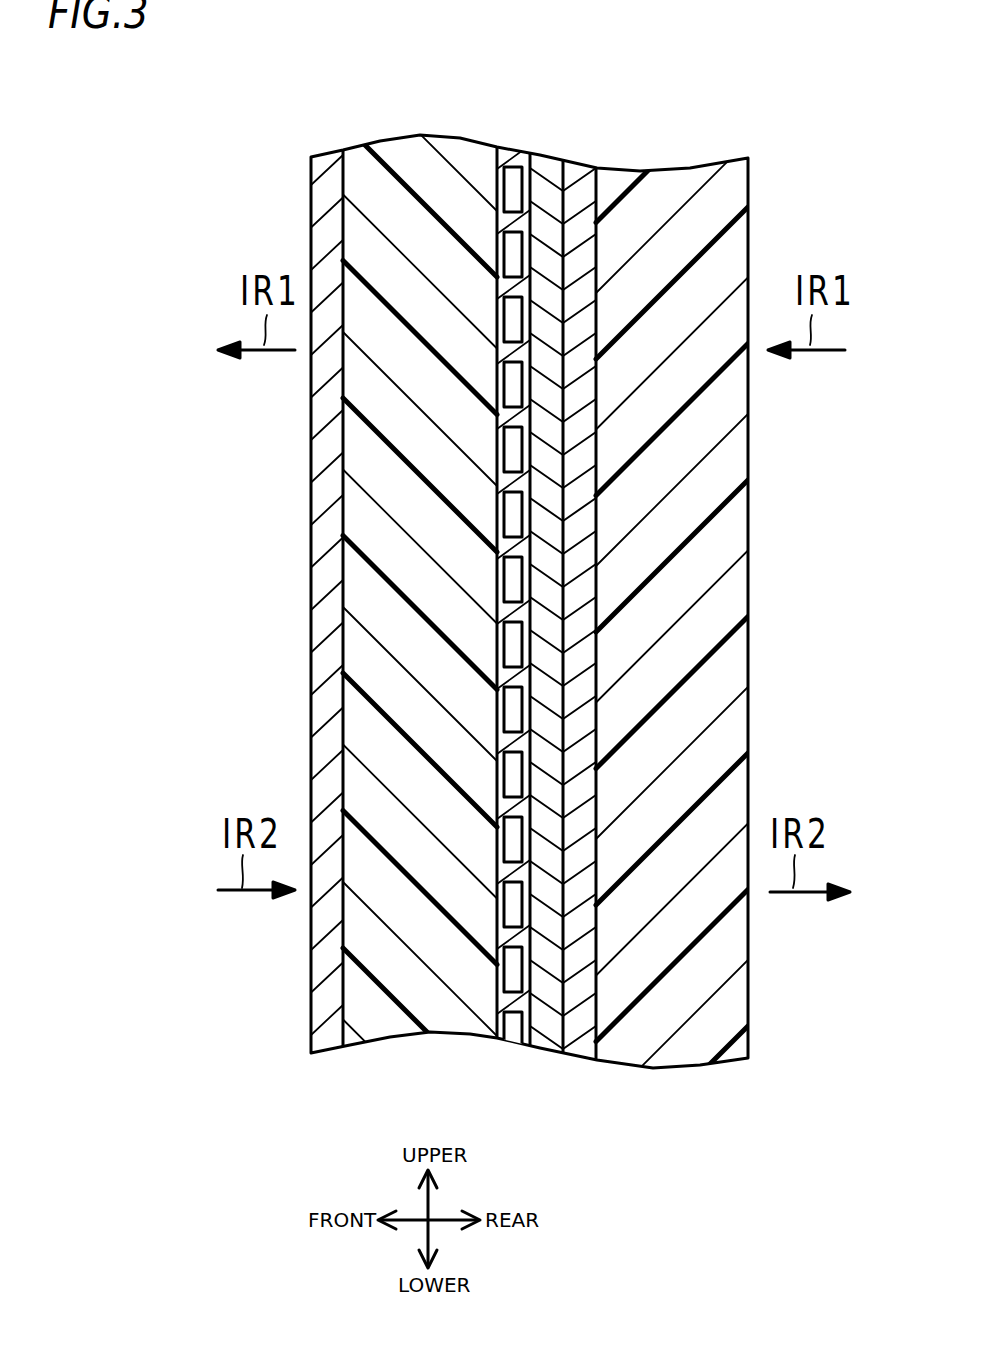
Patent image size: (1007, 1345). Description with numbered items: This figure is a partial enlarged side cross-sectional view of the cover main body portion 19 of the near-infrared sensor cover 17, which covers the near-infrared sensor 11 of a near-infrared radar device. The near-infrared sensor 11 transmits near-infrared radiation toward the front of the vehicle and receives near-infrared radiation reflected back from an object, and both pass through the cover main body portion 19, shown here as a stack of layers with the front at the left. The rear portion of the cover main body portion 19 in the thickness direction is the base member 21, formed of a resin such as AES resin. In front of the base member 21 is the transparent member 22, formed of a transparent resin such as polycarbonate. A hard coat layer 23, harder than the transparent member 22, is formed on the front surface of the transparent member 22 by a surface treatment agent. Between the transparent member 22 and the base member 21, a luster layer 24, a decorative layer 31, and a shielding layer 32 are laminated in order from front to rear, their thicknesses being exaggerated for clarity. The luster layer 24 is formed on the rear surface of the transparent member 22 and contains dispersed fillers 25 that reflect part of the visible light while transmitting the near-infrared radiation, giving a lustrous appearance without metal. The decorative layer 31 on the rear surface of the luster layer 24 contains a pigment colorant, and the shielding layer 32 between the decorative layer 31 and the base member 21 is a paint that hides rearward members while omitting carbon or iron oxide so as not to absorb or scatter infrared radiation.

The cover main body portion 19 is at (470, 561).
The near-infrared sensor cover 17 is at (529, 601).
The near-infrared sensor 11 is at (529, 601).
The base member 21 is at (668, 180).
The transparent member 22 is at (414, 147).
The hard coat layer 23 is at (325, 1038).
The luster layer 24 is at (499, 1042).
The fillers 25 is at (507, 172).
The decorative layer 31 is at (546, 1048).
The shielding layer 32 is at (579, 1052).